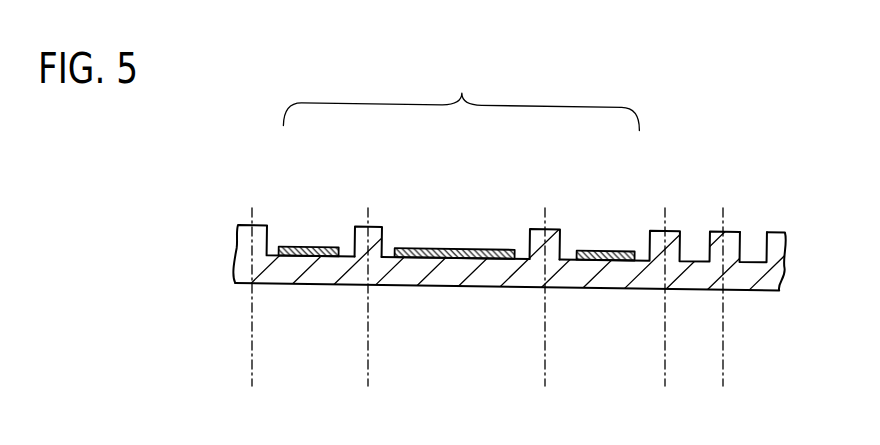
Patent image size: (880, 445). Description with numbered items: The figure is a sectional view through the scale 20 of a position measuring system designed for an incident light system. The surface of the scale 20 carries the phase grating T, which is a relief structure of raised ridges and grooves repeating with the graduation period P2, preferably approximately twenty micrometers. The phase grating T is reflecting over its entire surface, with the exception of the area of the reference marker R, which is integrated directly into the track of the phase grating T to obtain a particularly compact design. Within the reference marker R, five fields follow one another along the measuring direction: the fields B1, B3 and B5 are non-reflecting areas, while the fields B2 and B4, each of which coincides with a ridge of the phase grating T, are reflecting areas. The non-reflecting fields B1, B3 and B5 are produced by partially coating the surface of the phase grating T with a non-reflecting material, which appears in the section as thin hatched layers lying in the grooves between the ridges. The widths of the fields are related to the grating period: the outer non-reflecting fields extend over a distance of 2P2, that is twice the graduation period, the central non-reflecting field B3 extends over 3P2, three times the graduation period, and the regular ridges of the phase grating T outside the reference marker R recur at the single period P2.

The scale 20 is at (787, 282).
The phase grating T is at (752, 242).
The reference marker R is at (461, 89).
The field B1 is at (340, 207).
The field B2 is at (398, 207).
The field B3 is at (517, 207).
The field B4 is at (577, 207).
The field B5 is at (637, 207).
The graduation period P2 is at (723, 360).
The double graduation period 2P2 is at (368, 360).
The triple graduation period 3P2 is at (545, 360).